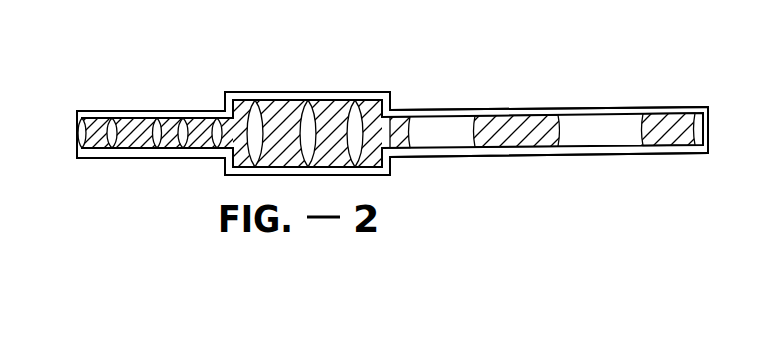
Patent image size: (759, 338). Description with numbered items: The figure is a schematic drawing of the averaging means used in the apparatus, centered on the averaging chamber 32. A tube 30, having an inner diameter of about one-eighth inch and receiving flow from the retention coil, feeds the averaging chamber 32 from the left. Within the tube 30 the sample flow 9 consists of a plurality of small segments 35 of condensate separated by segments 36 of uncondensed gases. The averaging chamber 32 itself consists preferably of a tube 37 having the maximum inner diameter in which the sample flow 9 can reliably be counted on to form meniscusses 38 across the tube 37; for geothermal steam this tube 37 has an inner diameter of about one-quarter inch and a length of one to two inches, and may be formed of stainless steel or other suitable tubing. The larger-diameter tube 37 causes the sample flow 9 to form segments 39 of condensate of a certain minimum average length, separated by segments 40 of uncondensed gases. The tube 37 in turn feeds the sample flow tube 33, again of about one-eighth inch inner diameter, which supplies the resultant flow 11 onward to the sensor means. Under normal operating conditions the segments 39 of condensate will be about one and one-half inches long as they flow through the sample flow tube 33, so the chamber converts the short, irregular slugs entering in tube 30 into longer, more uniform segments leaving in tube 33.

The averaging chamber 32 is at (381, 77).
The tube 30 is at (143, 112).
The sample flow tube 33 is at (597, 107).
The segments of condensate 35 is at (107, 138).
The segments of uncondensed gases 36 is at (125, 138).
The sample flow 9 is at (156, 138).
The tube 37 is at (253, 128).
The meniscusses 38 is at (254, 132).
The segments of condensate 39 is at (492, 133).
The resultant flow 11 is at (568, 135).
The segments of uncondensed gases 40 is at (636, 138).